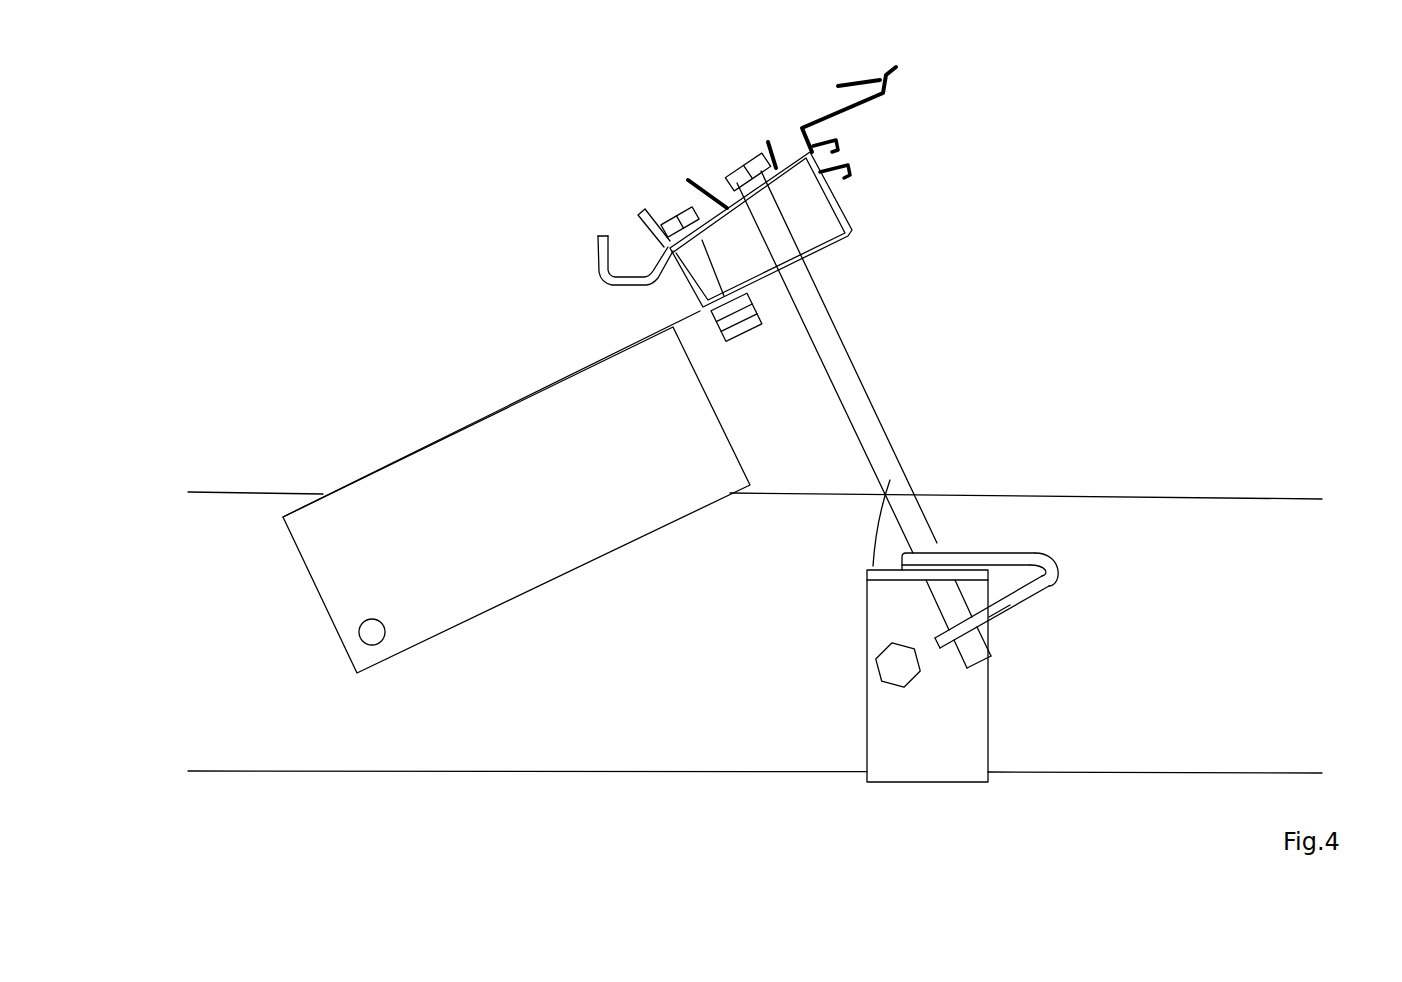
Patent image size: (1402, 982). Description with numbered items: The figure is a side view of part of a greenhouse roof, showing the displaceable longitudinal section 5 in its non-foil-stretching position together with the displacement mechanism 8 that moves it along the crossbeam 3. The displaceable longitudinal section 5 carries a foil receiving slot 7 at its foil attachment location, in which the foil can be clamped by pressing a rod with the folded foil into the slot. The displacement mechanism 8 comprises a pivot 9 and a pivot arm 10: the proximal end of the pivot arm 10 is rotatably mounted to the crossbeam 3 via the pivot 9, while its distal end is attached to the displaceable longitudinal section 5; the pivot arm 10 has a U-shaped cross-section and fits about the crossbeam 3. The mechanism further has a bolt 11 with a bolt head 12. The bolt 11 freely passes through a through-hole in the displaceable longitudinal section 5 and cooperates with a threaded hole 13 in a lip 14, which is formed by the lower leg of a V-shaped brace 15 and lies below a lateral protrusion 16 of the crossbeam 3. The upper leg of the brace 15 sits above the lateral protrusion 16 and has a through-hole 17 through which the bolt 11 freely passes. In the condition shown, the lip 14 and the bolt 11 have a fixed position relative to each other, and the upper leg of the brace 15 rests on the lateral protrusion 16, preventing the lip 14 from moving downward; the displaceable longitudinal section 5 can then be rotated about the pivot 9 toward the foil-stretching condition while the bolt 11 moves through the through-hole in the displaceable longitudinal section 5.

The crossbeam 3 is at (1097, 772).
The displaceable longitudinal section 5 is at (850, 195).
The foil receiving slot 7 is at (633, 257).
The displacement mechanism 8 is at (540, 392).
The pivot 9 is at (372, 646).
The pivot arm 10 is at (462, 452).
The bolt 11 is at (852, 352).
The bolt head 12 is at (747, 157).
The threaded hole 13 is at (960, 666).
The lip 14 is at (1015, 608).
The V-shaped brace 15 is at (1024, 545).
The lateral protrusion 16 is at (890, 480).
The through-hole 17 is at (930, 553).